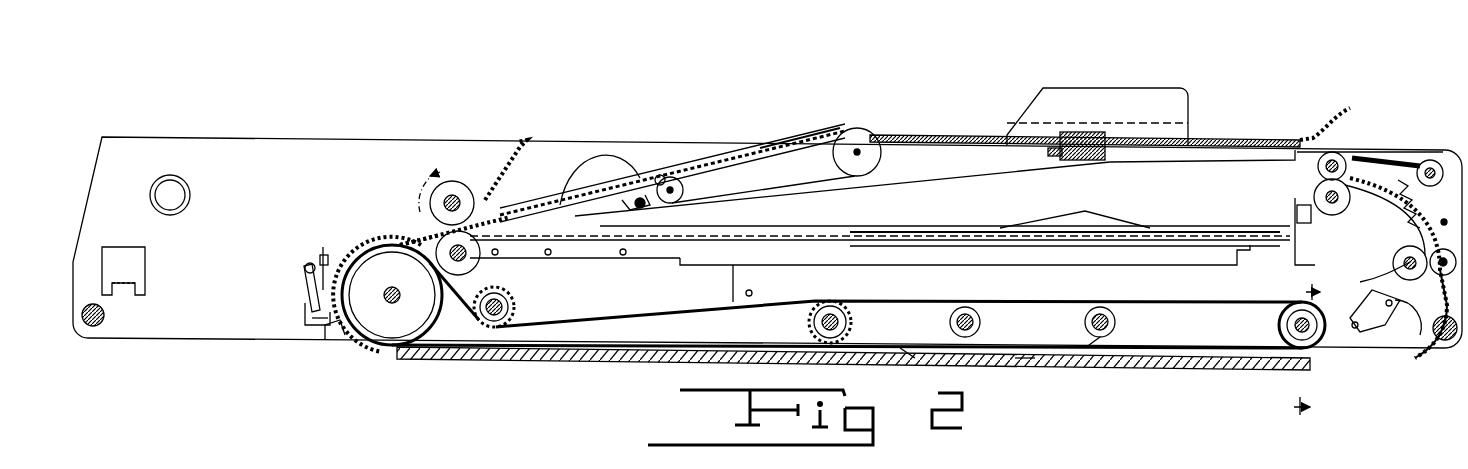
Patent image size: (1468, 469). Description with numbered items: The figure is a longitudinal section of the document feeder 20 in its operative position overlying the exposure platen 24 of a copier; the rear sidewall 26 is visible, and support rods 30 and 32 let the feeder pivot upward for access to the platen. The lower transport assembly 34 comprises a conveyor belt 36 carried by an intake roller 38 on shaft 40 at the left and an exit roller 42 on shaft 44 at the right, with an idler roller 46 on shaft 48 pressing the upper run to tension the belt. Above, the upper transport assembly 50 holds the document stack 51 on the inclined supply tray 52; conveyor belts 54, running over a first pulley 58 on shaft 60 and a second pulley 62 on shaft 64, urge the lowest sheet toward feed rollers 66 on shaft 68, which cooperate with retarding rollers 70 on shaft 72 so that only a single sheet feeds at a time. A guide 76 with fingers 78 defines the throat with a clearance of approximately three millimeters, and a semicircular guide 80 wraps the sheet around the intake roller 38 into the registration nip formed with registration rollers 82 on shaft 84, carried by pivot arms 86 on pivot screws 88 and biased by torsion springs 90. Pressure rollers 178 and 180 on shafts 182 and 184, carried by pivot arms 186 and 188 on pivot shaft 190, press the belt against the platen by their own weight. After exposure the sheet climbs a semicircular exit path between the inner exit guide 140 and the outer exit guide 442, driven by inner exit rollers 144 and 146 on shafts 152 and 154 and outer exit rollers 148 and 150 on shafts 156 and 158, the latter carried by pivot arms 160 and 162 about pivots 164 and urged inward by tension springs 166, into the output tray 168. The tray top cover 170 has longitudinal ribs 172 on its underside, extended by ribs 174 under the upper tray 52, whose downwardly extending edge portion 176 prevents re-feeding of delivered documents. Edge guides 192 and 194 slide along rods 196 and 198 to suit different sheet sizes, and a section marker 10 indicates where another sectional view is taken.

The section line 10 is at (1320, 350).
The document feeder 20 is at (1013, 82).
The exposure platen 24 is at (1222, 364).
The rear sidewall 26 is at (305, 140).
The support rod 30 is at (95, 327).
The support rod 32 is at (1447, 341).
The lower transport assembly 34 is at (691, 302).
The conveyor belt 36 is at (636, 317).
The intake roller 38 is at (432, 342).
The shaft 40 is at (392, 305).
The exit roller 42 is at (1280, 313).
The shaft 44 is at (1280, 325).
The idler roller 46 is at (512, 305).
The shaft 48 is at (495, 329).
The upper transport assembly 50 is at (723, 155).
The stack of original sheets 51 is at (838, 126).
The supply tray 52 is at (555, 205).
The conveyor belts 54 is at (808, 128).
The first pulley 58 is at (672, 176).
The shaft 60 is at (688, 190).
The second pulley 62 is at (862, 133).
The shaft 64 is at (862, 152).
The feed rollers 66 is at (460, 221).
The shaft 68 is at (480, 258).
The end retarding rollers 70 is at (455, 193).
The shaft 72 is at (458, 196).
The guide 76 is at (515, 172).
The fingers 78 is at (400, 232).
The semicircular guide 80 is at (345, 240).
The registration rollers 82 is at (328, 342).
The registration roller shaft 84 is at (312, 318).
The pivot arms 86 is at (300, 290).
The pivot screws 88 is at (312, 262).
The torsion springs 90 is at (323, 250).
The inner exit guide 140 is at (1390, 345).
The inner exit rollers 144 is at (1360, 278).
The inner exit rollers 146 is at (1332, 215).
The outer exit rollers 148 is at (1432, 253).
The outer exit rollers 150 is at (1346, 158).
The shaft 152 is at (1394, 263).
The shaft 154 is at (1295, 190).
The shaft 156 is at (1410, 276).
The shaft 158 is at (1335, 130).
The pivot arms 160 is at (1418, 228).
The pivot arms 162 is at (1420, 160).
The pivots 164 is at (1440, 175).
The tension springs 166 is at (1385, 220).
The output tray 168 is at (1152, 243).
The top cover 170 is at (1250, 140).
The longitudinal ribs 172 is at (973, 172).
The ribs 174 is at (775, 197).
The downwardly extending edge portion 176 is at (540, 223).
The pressure roller 178 is at (811, 321).
The pressure roller 180 is at (1116, 322).
The shaft 182 is at (851, 318).
The shaft 184 is at (1100, 349).
The pivot arms 186 is at (908, 351).
The pivot arms 188 is at (1025, 360).
The pivot shaft 190 is at (981, 322).
The edge guide 192 is at (613, 160).
The edge guide 194 is at (1125, 100).
The rod 196 is at (640, 206).
The rod 198 is at (1085, 160).
The belt 442 is at (1426, 350).